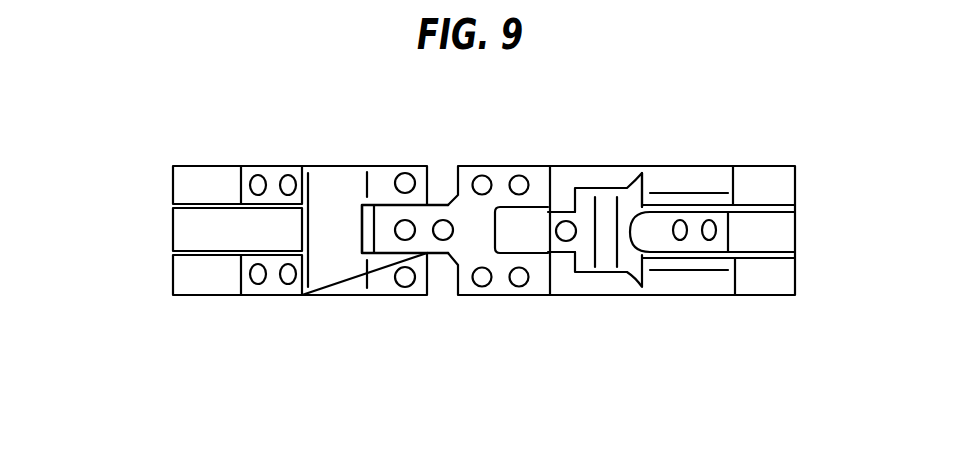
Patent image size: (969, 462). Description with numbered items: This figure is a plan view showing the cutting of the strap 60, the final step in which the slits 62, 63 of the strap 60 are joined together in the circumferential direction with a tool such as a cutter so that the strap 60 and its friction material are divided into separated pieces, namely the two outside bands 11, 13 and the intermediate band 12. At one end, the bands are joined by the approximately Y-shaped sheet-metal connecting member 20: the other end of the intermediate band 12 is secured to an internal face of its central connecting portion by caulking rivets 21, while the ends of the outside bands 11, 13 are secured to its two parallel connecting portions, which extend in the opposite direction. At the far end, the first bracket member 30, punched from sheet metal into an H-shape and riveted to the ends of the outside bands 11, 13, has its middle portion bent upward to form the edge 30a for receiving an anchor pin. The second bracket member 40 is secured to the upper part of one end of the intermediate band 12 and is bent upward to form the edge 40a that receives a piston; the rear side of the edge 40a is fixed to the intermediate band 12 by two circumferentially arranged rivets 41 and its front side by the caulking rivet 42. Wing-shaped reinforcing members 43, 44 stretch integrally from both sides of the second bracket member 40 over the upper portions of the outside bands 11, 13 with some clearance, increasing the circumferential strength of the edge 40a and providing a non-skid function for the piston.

The outside band 11 is at (790, 193).
The intermediate band 12 is at (792, 238).
The outside band 13 is at (792, 285).
The connecting member 20 is at (512, 165).
The caulking rivets 21 is at (519, 287).
The first bracket member 30 is at (357, 165).
The edge 30a is at (328, 288).
The second bracket member 40 is at (695, 165).
The edge 40a is at (603, 195).
The rivets 41 is at (709, 241).
The caulking rivet 42 is at (566, 242).
The reinforcing member 43 is at (726, 175).
The reinforcing member 44 is at (723, 290).
The strap 60 is at (820, 145).
The slit 62 is at (205, 204).
The slit 63 is at (192, 252).